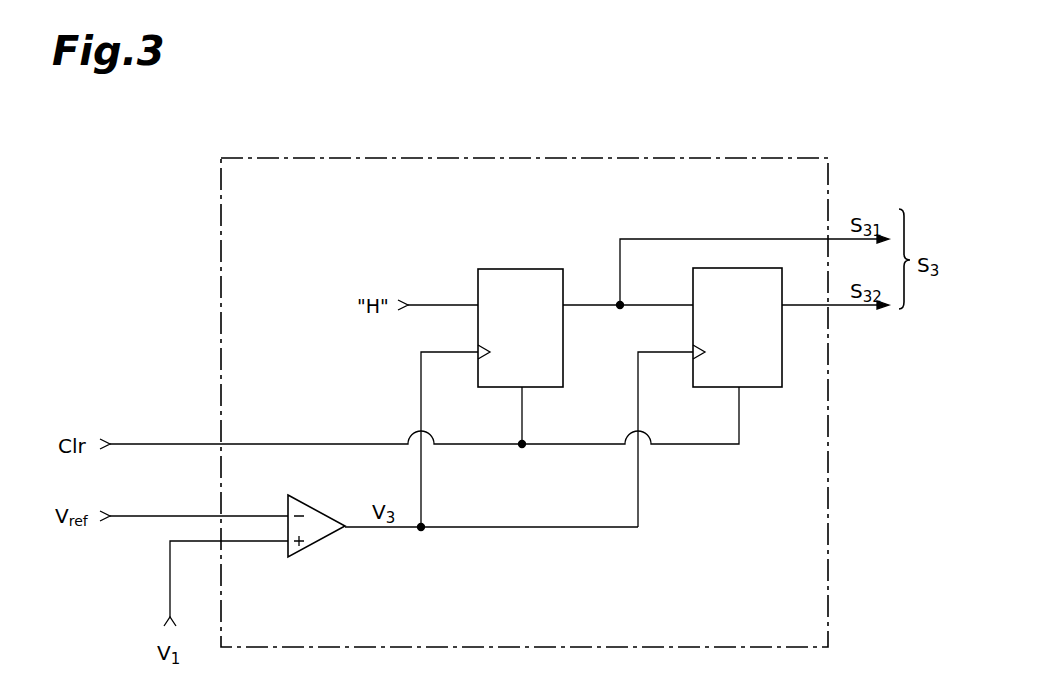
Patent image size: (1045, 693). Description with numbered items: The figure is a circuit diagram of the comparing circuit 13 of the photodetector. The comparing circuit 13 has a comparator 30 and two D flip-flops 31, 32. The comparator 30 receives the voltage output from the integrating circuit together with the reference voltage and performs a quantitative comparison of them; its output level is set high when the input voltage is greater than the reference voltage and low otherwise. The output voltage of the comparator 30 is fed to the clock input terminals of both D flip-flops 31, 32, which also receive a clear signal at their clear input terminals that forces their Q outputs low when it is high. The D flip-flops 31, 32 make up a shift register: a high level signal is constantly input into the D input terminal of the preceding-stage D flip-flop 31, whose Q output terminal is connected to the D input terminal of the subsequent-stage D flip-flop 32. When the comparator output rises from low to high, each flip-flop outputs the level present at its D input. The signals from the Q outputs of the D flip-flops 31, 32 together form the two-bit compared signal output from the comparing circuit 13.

The comparing circuit 13 is at (742, 158).
The comparator 30 is at (322, 543).
The D flip-flop 31 is at (518, 268).
The D flip-flop 32 is at (767, 388).